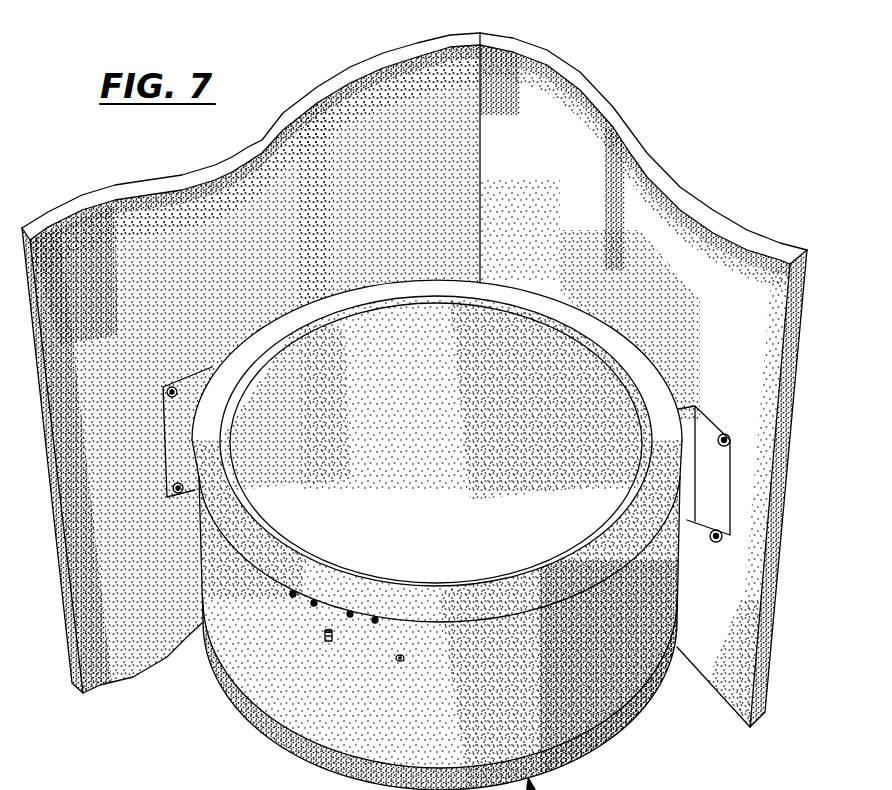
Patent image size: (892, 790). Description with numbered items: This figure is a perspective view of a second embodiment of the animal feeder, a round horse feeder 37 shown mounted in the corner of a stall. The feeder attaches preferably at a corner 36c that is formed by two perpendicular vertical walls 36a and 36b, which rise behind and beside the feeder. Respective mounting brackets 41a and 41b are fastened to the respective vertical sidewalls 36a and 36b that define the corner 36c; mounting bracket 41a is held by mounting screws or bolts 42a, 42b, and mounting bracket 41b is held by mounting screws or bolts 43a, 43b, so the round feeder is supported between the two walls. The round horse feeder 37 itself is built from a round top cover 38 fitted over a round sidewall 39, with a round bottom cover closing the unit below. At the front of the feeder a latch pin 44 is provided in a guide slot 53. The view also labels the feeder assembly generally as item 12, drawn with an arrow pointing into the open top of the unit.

The cooking vessel 12 is at (291, 426).
The wall 36a is at (546, 176).
The wall 36b is at (445, 144).
The corner 36c is at (480, 90).
The round horse feeder 37 is at (608, 766).
The round top cover 38 is at (634, 356).
The round sidewall 39 is at (676, 648).
The mounting bracket 41a is at (704, 430).
The mounting bracket 41b is at (173, 463).
The mounting screw or bolt 42a is at (720, 446).
The mounting screw or bolt 42b is at (712, 540).
The mounting screw or bolt 43a is at (161, 412).
The mounting screw or bolt 43b is at (179, 493).
The latch pin 44 is at (333, 633).
The guide slot 53 is at (322, 640).